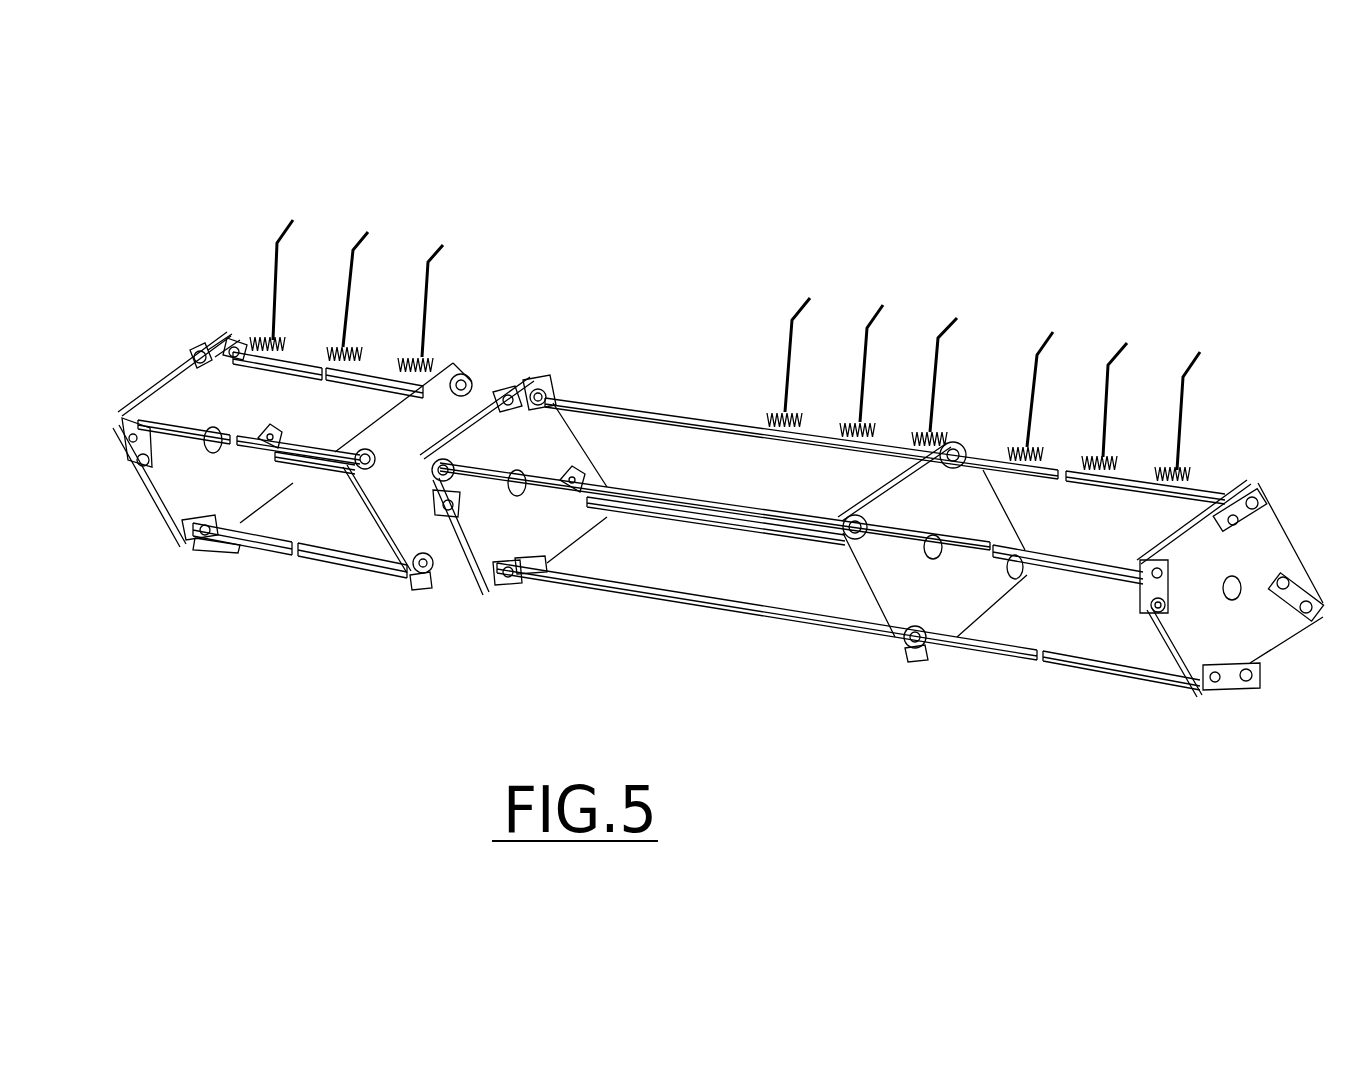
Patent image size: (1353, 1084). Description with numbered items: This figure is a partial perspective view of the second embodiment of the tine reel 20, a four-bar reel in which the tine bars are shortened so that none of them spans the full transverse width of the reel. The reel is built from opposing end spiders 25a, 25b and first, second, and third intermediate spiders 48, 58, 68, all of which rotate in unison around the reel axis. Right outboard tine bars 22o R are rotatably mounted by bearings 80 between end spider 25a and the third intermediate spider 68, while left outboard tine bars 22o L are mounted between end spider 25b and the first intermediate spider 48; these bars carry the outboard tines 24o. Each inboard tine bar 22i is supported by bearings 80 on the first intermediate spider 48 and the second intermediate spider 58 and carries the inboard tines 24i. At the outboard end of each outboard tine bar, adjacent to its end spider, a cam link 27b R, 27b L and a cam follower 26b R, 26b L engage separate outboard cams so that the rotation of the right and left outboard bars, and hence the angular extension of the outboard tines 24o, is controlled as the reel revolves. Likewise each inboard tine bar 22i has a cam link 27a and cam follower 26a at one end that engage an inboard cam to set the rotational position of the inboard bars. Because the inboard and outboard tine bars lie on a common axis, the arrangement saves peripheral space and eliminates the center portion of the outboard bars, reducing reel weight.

The tine reel 20 is at (698, 246).
The inboard tine bar 22i is at (720, 677).
The right outboard tine bar 22o R is at (373, 377).
The left outboard tine bar 22o L is at (1202, 487).
The inboard tines 24i is at (807, 300).
The outboard tines 24o is at (1117, 357).
The end spider 25a is at (192, 392).
The end spider 25b is at (1183, 543).
The cam follower 26a is at (492, 400).
The cam follower 26b R is at (192, 352).
The cam follower 26b L is at (1250, 500).
The cam link 27a is at (530, 377).
The cam link 27b R is at (203, 350).
The cam link 27b L is at (1268, 517).
The first intermediate spider 48 is at (875, 573).
The second intermediate spider 58 is at (560, 530).
The third intermediate spider 68 is at (443, 550).
The bearings 80 is at (413, 557).